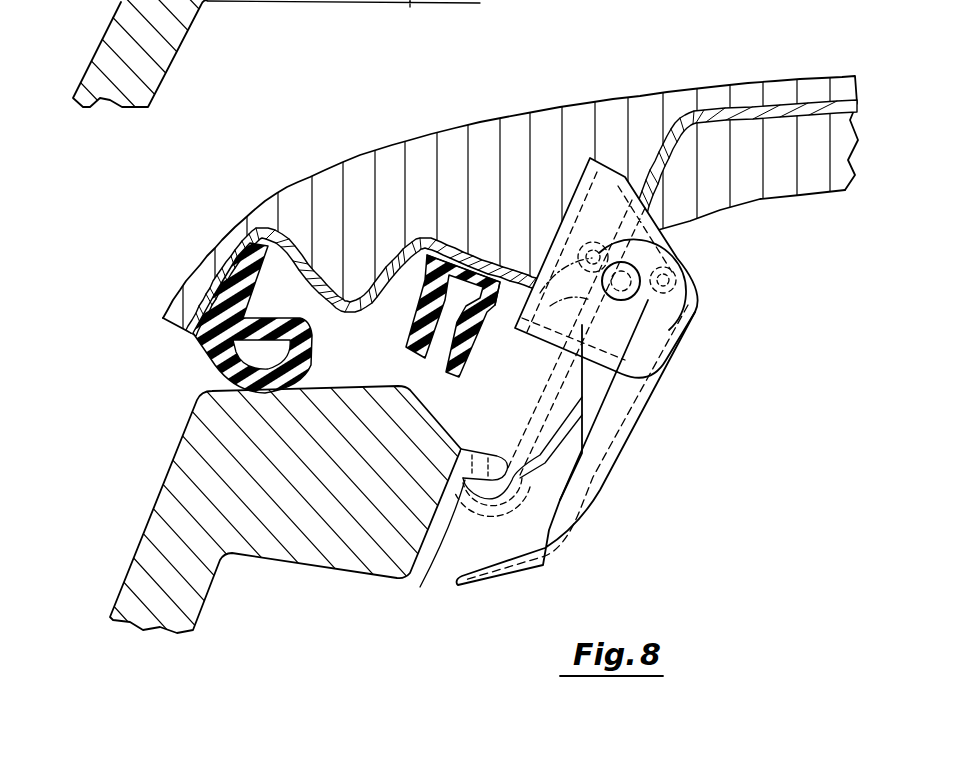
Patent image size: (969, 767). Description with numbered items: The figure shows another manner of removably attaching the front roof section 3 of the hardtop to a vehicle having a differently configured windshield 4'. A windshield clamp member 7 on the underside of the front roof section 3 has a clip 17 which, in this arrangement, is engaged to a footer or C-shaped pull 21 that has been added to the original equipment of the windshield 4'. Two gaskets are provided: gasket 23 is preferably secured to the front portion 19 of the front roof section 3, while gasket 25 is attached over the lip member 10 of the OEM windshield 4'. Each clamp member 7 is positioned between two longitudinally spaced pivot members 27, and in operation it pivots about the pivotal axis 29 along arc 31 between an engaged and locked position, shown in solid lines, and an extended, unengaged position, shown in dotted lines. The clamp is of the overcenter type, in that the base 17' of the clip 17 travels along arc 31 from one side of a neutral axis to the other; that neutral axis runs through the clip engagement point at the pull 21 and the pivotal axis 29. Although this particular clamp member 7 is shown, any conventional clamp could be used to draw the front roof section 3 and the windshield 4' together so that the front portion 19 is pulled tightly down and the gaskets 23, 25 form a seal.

The front roof section 3 is at (482, 112).
The windshield 4' is at (271, 404).
The clamp member 7 is at (620, 484).
The lip member 10 is at (418, 367).
The clip 17 is at (491, 511).
The base of the clip 17' is at (675, 245).
The front portion 19 is at (327, 267).
The footer or C-shaped pull 21 is at (506, 465).
The gasket 23 is at (213, 368).
The gasket 25 is at (404, 318).
The pivot members 27 is at (672, 331).
The pivotal axis 29 is at (617, 300).
The arc 31 is at (660, 229).